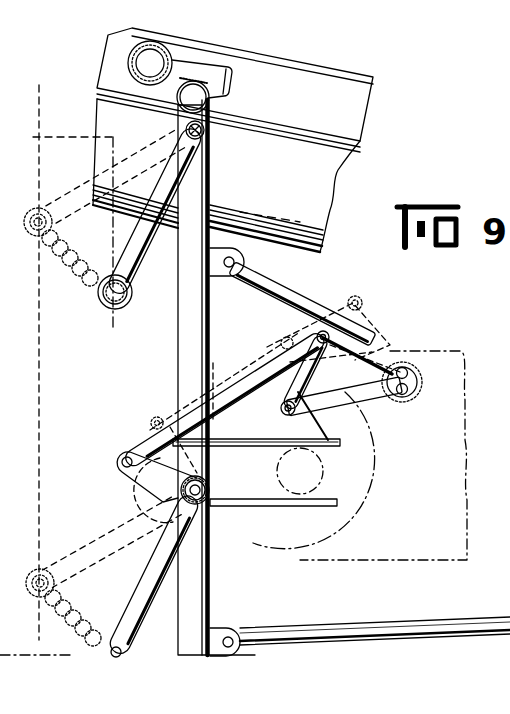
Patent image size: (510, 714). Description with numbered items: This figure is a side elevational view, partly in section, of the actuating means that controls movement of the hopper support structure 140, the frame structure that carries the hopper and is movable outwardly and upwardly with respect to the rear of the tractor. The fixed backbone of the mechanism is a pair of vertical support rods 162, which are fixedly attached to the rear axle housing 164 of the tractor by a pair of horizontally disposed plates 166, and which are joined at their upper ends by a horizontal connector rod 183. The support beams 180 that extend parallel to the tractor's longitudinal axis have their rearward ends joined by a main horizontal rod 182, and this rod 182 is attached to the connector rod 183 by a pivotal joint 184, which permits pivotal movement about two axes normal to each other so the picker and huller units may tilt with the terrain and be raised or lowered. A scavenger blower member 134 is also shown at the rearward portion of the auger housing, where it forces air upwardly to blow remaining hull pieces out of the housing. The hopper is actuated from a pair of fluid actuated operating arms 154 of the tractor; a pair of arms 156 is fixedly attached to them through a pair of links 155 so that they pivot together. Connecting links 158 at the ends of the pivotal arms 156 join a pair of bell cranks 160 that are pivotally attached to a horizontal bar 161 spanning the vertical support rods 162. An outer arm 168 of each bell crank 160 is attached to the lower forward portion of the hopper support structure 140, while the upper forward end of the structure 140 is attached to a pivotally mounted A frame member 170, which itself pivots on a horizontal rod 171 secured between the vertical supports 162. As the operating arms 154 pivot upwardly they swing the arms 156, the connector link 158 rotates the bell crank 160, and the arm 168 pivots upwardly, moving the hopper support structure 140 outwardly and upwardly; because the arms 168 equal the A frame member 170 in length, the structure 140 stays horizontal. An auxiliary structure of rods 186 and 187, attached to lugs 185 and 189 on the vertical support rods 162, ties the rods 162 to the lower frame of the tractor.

The scavenger blower member 134 is at (332, 176).
The hopper support structure 140 is at (115, 405).
The fluid actuated operating arms 154 is at (366, 398).
The links 155 is at (333, 402).
The pivotal arms 156 is at (387, 352).
The connecting links 158 is at (226, 391).
The bell cranks 160 is at (156, 466).
The horizontal bar 161 is at (209, 489).
The vertical support rods 162 is at (211, 568).
The rear axle housing 164 is at (312, 470).
The horizontally disposed plates 166 is at (232, 447).
The outer arm of bell crank 168 is at (143, 620).
The A frame member 170 is at (137, 265).
The horizontal rod 171 is at (207, 134).
The support beams 180 is at (340, 80).
The main horizontal rod 182 is at (128, 62).
The horizontal connector rod 183 is at (210, 99).
The pivotal joint 184 is at (199, 64).
The lug 185 is at (222, 275).
The rods 186 is at (280, 287).
The rods 187 is at (394, 632).
The lug 189 is at (231, 632).